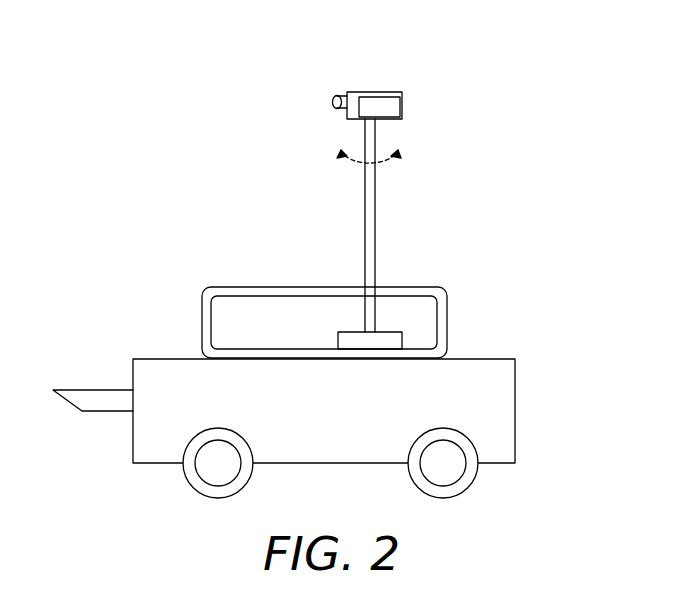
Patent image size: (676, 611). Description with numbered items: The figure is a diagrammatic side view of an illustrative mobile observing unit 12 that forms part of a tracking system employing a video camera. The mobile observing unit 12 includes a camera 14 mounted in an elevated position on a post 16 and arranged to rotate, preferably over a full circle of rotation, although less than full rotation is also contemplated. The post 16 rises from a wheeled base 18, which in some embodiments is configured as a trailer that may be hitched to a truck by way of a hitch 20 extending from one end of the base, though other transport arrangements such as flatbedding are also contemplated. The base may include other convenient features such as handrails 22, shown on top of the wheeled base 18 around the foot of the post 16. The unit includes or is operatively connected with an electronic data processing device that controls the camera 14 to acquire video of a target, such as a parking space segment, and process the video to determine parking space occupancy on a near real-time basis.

The mobile observing unit 12 is at (209, 223).
The camera 14 is at (409, 80).
The post 16 is at (376, 221).
The wheeled base 18 is at (516, 400).
The hitch 20 is at (100, 389).
The handrails 22 is at (285, 287).